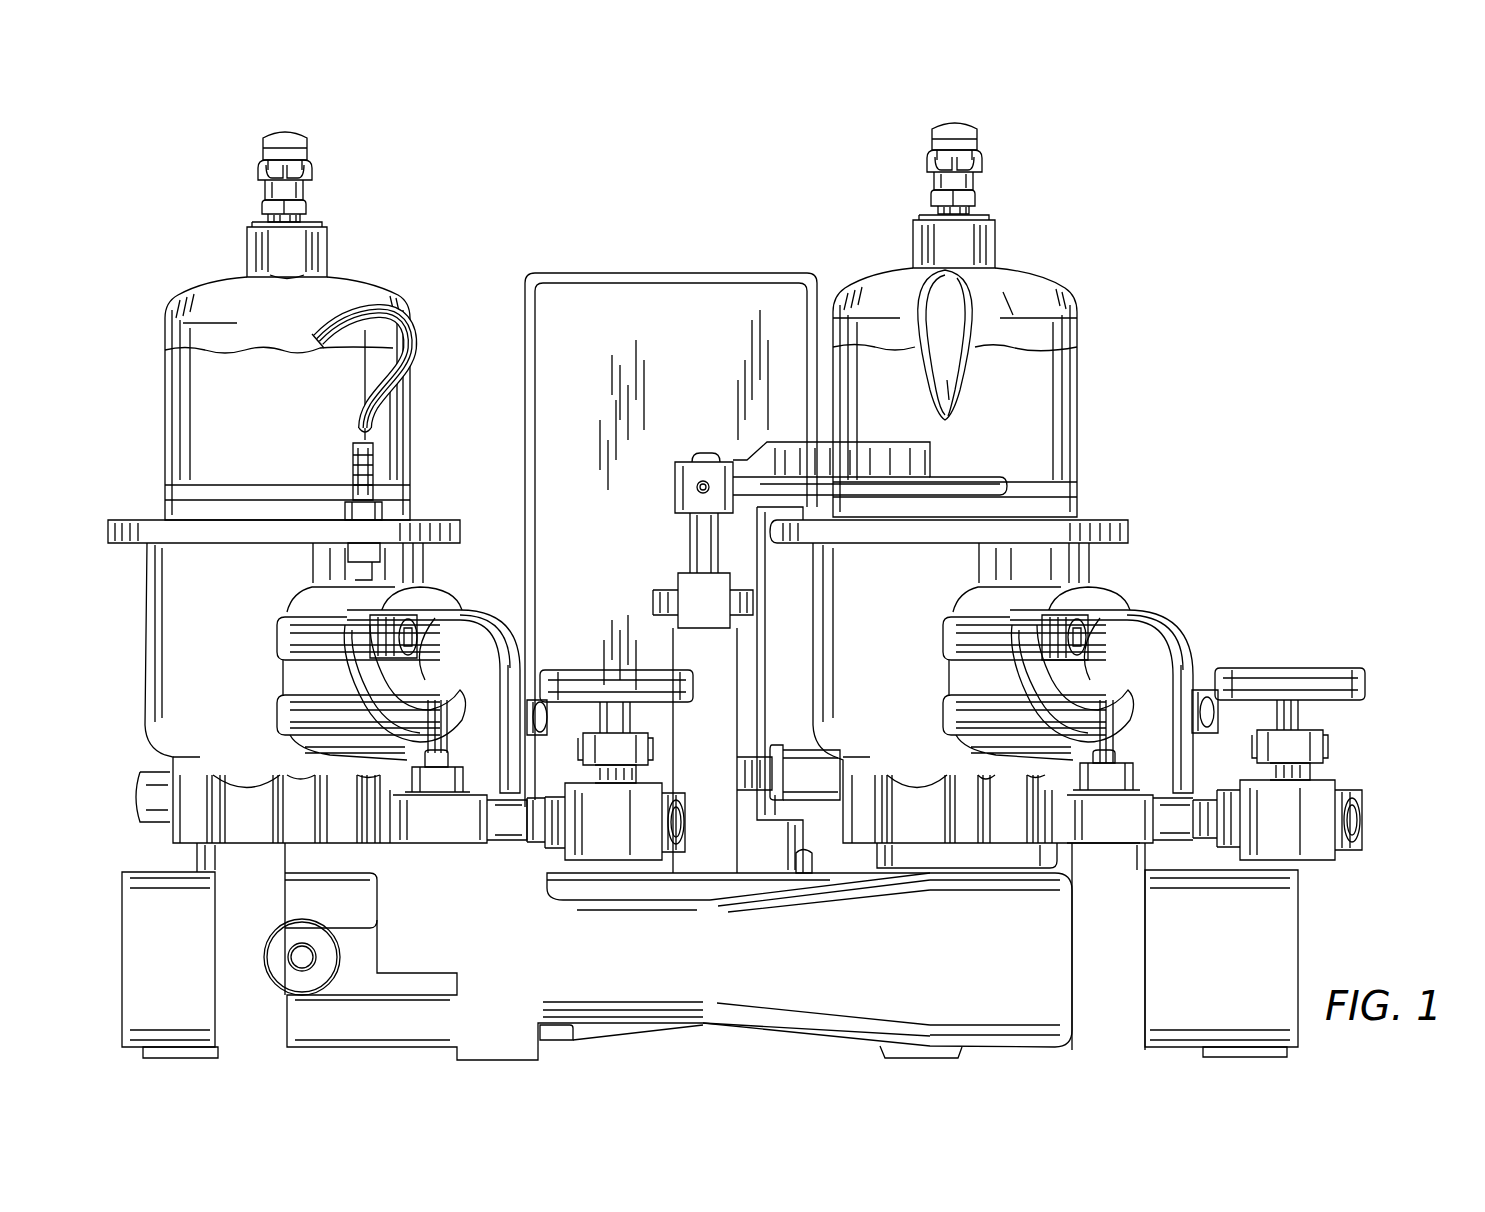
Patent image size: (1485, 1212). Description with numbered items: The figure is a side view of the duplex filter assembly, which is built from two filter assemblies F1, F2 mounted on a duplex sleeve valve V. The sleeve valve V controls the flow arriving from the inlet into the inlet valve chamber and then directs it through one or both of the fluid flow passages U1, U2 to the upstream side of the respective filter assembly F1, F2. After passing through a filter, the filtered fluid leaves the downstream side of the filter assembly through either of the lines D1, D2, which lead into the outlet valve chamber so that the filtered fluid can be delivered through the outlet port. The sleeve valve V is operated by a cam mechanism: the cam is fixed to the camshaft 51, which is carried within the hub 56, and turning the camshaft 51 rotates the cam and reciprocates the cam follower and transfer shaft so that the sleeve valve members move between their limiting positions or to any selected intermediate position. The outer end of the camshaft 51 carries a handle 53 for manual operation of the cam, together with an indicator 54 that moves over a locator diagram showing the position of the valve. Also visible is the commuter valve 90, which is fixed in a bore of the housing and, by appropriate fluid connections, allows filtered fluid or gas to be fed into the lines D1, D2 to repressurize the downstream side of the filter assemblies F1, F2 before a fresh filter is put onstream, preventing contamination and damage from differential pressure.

The filter assembly F1 is at (408, 435).
The filter assembly F2 is at (1080, 405).
The line D1 is at (280, 843).
The line D2 is at (955, 812).
The fluid flow passage U1 is at (486, 622).
The fluid flow passage U2 is at (1185, 645).
The camshaft 51 is at (690, 546).
The handle 53 is at (975, 335).
The indicator 54 is at (918, 490).
The hub 56 is at (712, 742).
The commuter valve 90 is at (275, 930).
The duplex sleeve valve V is at (680, 1033).